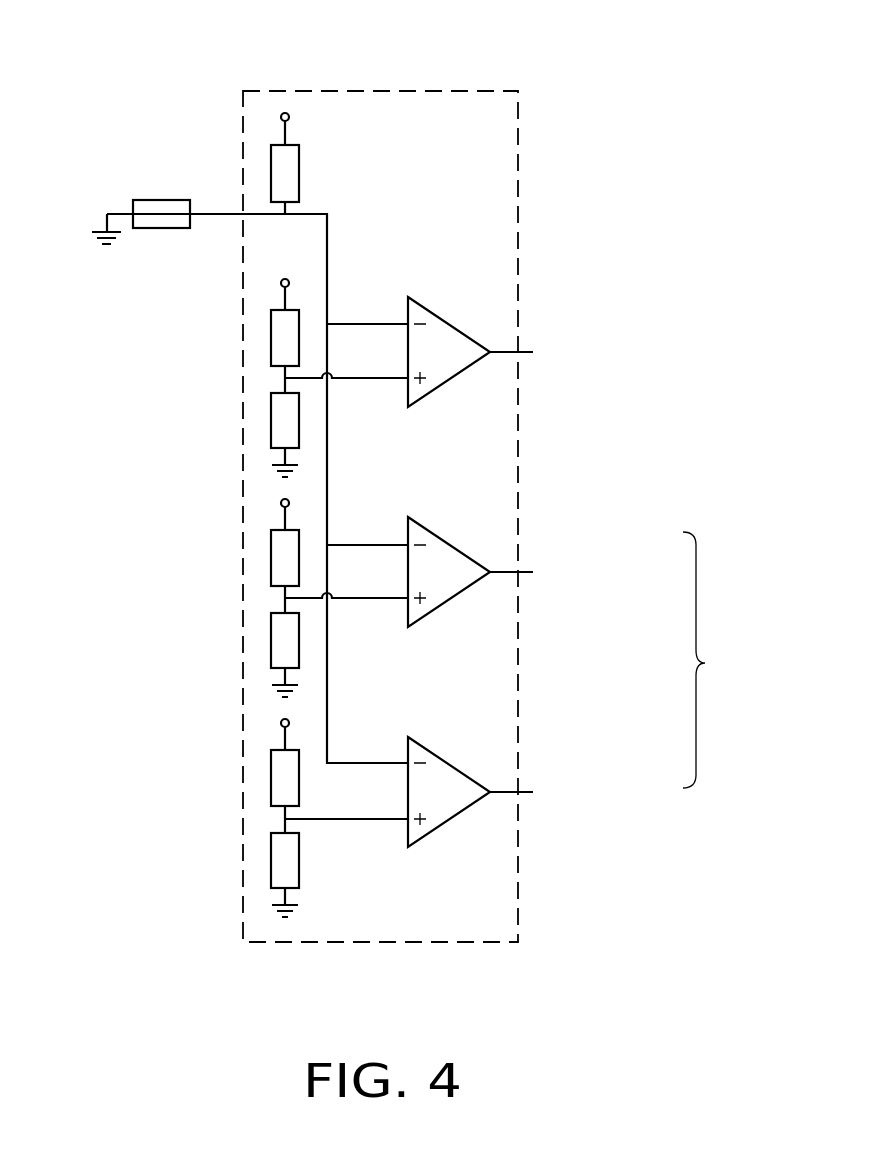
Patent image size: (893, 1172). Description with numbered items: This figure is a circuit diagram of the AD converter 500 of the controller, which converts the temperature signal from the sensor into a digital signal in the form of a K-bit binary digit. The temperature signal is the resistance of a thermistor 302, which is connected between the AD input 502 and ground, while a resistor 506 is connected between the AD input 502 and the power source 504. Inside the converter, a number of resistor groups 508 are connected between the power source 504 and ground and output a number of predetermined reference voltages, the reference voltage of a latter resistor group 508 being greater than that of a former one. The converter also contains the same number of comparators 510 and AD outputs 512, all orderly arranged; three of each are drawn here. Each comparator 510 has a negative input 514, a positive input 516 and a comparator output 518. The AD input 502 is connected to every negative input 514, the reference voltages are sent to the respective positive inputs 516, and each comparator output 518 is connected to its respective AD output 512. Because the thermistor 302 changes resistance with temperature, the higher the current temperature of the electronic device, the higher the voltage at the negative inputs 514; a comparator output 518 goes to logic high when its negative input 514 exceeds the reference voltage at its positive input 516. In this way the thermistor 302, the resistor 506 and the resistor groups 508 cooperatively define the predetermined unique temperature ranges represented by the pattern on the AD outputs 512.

The thermistor 302 is at (152, 212).
The AD converter 500 is at (468, 91).
The AD input 502 is at (243, 214).
The power source 504 is at (286, 112).
The resistor 506 is at (287, 163).
The resistor groups 508 is at (280, 412).
The comparators 510 is at (440, 342).
The AD outputs 512 is at (724, 660).
The negative input 514 is at (409, 322).
The positive input 516 is at (409, 382).
The comparator output 518 is at (492, 352).